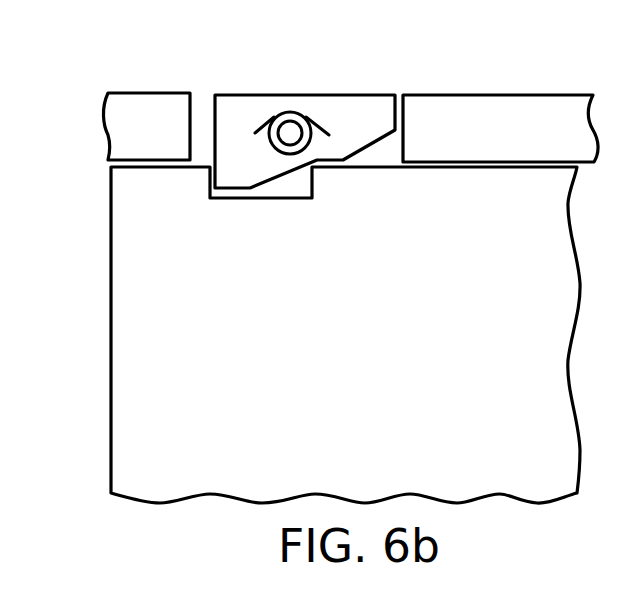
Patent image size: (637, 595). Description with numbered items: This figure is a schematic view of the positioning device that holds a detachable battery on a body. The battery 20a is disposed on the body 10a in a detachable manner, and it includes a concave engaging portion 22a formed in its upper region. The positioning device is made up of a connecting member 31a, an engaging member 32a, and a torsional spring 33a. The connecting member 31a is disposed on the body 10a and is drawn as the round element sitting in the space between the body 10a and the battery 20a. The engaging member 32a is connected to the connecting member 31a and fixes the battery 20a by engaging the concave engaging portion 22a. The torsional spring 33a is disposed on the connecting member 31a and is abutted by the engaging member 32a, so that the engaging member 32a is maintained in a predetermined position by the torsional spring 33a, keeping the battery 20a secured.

The body 10a is at (146, 127).
The battery 20a is at (140, 418).
The concave engaging portion 22a is at (278, 188).
The connecting member 31a is at (290, 125).
The engaging member 32a is at (377, 108).
The torsional spring 33a is at (325, 123).